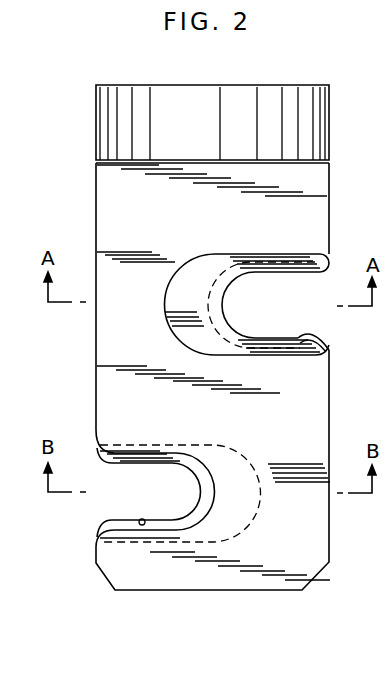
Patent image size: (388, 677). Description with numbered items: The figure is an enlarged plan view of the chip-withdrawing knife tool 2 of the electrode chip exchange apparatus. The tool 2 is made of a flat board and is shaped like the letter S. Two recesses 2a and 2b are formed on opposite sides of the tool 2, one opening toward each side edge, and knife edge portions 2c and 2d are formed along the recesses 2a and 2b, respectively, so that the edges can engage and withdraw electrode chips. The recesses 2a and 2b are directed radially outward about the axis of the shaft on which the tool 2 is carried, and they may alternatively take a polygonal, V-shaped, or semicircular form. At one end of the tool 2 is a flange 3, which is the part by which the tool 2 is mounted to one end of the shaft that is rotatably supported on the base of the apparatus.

The knife tool 2 is at (107, 199).
The flange 3 is at (112, 112).
The recess 2a is at (331, 343).
The recess 2b is at (141, 525).
The knife edge portion 2c is at (224, 287).
The knife edge portion 2d is at (200, 477).